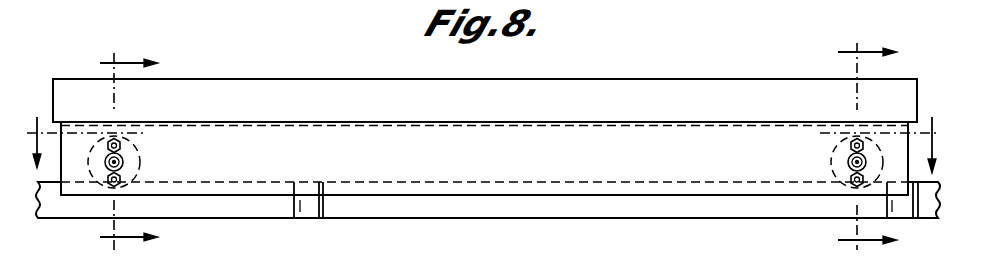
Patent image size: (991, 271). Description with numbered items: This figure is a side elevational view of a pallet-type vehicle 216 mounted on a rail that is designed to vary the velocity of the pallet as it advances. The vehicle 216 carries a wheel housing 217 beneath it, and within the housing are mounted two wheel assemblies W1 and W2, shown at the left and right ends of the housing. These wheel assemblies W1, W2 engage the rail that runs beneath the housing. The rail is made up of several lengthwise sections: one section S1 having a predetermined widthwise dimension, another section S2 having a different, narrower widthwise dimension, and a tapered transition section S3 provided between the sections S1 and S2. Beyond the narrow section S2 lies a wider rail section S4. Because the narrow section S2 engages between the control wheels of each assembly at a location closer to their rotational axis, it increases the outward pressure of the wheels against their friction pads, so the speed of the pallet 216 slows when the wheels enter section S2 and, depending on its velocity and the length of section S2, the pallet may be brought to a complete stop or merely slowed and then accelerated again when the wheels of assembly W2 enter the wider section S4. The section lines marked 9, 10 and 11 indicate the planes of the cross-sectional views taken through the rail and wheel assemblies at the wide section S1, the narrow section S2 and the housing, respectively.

The vehicle 216 is at (612, 100).
The wheel housing 217 is at (655, 170).
The rail section S1 is at (252, 210).
The rail section S2 is at (583, 211).
The tapered transition section S3 is at (313, 208).
The rail section S4 is at (932, 218).
The wheel assembly W1 is at (138, 170).
The wheel assembly W2 is at (833, 168).
The section line 9- 9 is at (487, 131).
The section line 10- 10 is at (119, 151).
The section line 11- 11 is at (859, 148).